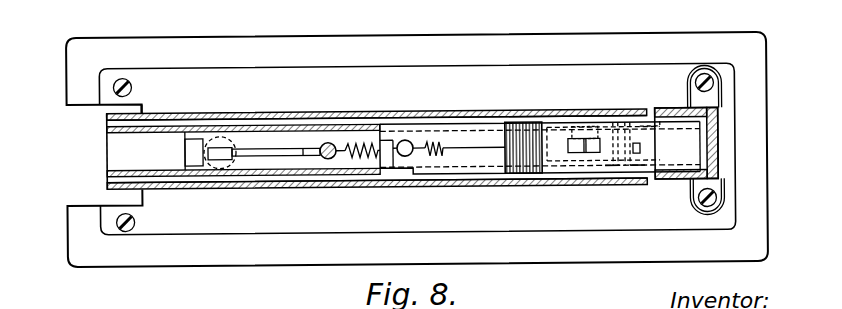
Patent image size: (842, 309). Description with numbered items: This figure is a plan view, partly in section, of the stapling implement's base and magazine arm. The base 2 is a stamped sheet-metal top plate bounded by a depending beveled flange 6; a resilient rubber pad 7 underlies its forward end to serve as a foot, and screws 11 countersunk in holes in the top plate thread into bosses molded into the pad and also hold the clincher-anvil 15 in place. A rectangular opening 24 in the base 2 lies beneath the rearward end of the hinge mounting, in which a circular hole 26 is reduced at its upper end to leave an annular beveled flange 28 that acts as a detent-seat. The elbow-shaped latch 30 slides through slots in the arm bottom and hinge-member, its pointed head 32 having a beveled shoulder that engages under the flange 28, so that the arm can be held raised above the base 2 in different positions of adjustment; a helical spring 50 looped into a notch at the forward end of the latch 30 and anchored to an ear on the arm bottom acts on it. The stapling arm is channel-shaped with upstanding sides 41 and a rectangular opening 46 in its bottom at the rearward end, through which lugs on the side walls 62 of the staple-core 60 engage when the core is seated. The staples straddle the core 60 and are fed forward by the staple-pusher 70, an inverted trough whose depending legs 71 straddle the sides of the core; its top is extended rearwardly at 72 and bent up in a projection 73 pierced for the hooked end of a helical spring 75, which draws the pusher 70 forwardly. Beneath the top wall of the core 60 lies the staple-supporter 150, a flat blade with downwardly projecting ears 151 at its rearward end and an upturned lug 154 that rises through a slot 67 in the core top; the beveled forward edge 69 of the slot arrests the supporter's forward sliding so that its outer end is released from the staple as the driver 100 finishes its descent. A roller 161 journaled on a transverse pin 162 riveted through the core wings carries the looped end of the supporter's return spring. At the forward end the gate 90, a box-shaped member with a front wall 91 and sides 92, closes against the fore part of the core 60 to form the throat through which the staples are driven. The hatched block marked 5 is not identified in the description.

The base 2 is at (505, 35).
The beveled flange 6 is at (311, 37).
The screws 11 is at (123, 76).
The clincher-anvil 15 is at (722, 188).
The rectangular opening 24 is at (143, 106).
The staple-core 60 is at (107, 133).
The side walls 62 is at (213, 118).
The upstanding sides 41 is at (338, 187).
The rectangular opening 46 is at (185, 150).
The beveled flange 28 is at (226, 136).
The circular opening 26 is at (240, 140).
The latch 30 is at (292, 147).
The pointed head 32 is at (328, 142).
The helical spring 50 is at (370, 143).
The resilient pad 7 is at (353, 113).
The depending legs 71 is at (432, 124).
The projection 73 is at (390, 175).
The rearward extension 72 is at (396, 140).
The helical spring 75 is at (443, 155).
The staple-pusher 70 is at (474, 144).
The piston 5 is at (505, 149).
The slot 67 is at (568, 147).
The lug 154 is at (590, 140).
The beveled edge 69 is at (616, 126).
The ears 151 is at (640, 154).
The transverse pin 162 is at (612, 167).
The roller 161 is at (636, 170).
The staple-supporter 150 is at (660, 120).
The sides 92 is at (680, 112).
The front wall 91 is at (715, 141).
The gate 90 is at (716, 116).
The driver 100 is at (686, 147).